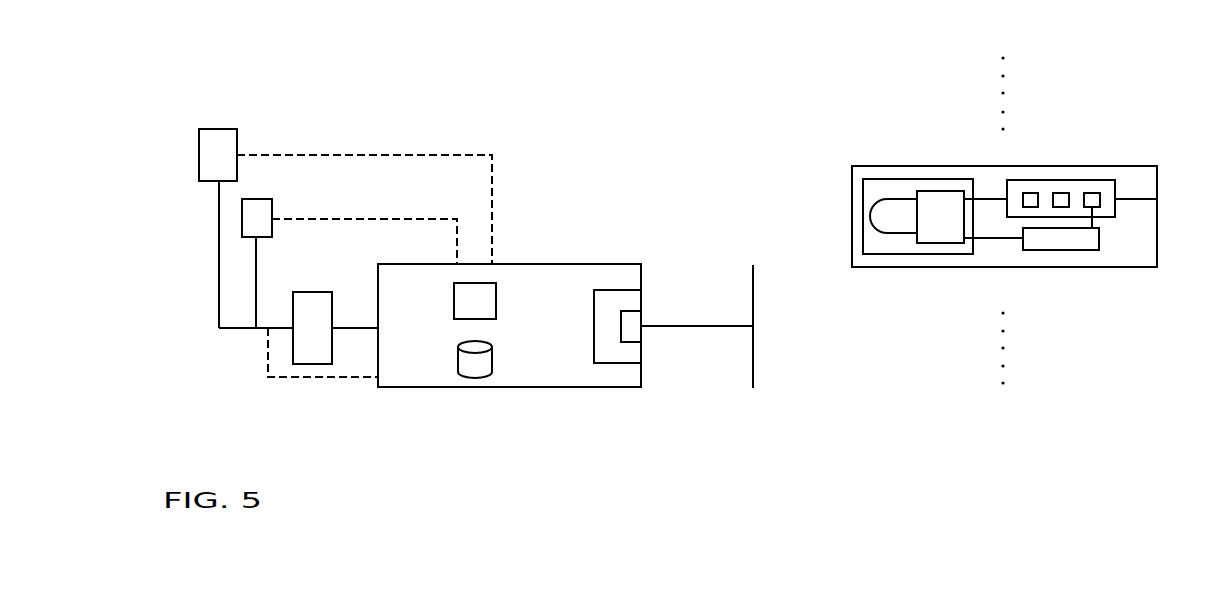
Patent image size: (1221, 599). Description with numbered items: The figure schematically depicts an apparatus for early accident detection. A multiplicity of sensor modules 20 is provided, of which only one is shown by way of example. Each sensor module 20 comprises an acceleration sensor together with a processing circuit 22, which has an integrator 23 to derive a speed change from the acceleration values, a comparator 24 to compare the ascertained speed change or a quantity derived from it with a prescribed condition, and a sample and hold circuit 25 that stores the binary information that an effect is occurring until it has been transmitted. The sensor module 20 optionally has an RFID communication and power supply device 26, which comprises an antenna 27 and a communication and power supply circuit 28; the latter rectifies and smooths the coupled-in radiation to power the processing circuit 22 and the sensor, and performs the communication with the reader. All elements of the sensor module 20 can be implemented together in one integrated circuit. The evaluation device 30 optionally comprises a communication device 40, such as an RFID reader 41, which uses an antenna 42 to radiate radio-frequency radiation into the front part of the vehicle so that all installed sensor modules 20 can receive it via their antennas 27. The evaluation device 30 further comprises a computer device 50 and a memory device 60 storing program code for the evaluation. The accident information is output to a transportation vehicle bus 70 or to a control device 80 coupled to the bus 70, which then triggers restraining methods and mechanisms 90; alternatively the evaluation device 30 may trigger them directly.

The sensor module 20 is at (948, 166).
The processing circuit 22 is at (1115, 199).
The integrator 23 is at (1092, 193).
The comparator 24 is at (1062, 193).
The sample and hold circuit 25 is at (1031, 193).
The RFID communication and power supply device 26 is at (887, 180).
The antenna 27 is at (896, 233).
The communication and power supply circuit 28 is at (948, 243).
The evaluation device 30 is at (398, 387).
The communication device 40 is at (604, 362).
The RFID reader 41 is at (629, 340).
The antenna 42 is at (753, 297).
The computer device 50 is at (494, 299).
The memory device 60 is at (474, 380).
The transportation vehicle bus 70 is at (230, 328).
The control device 80 is at (312, 295).
The restraining methods and mechanisms 90 is at (219, 129).